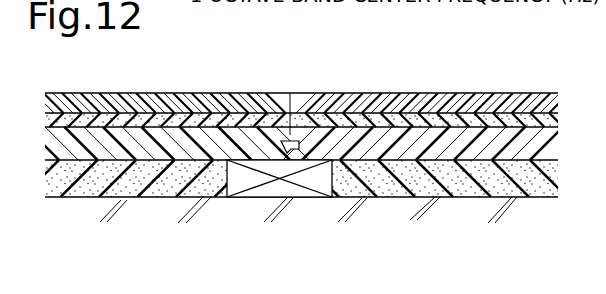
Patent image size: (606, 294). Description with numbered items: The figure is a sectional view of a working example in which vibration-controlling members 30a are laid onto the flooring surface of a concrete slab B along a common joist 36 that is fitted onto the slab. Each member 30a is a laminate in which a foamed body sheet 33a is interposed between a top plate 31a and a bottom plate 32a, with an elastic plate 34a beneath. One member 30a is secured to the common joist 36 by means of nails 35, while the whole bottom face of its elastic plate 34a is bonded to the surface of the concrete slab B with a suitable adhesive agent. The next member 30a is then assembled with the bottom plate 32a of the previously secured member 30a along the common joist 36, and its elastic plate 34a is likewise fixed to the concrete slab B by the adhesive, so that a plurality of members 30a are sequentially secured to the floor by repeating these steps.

The vibration-controlling member 30a is at (127, 86).
The top plate 31a is at (203, 120).
The bottom plate 32a is at (227, 145).
The foamed body sheet 33a is at (489, 122).
The elastic plate 34a is at (84, 186).
The nails 35 is at (283, 150).
The common joist 36 is at (313, 178).
The concrete slab B is at (377, 248).